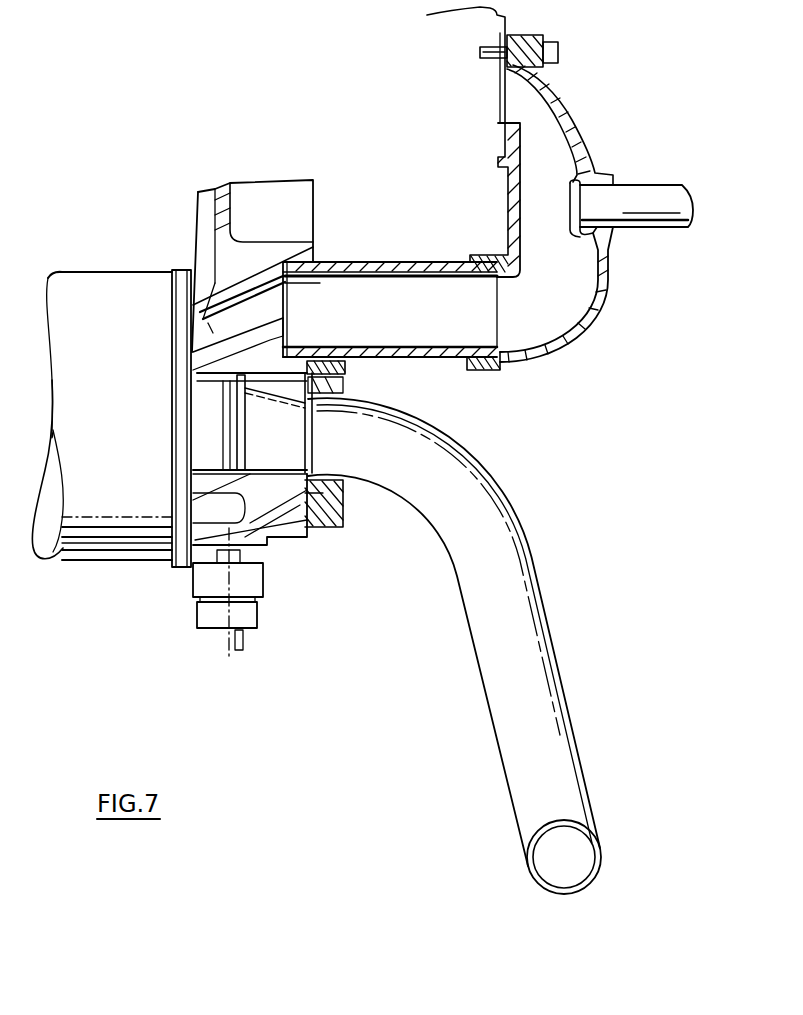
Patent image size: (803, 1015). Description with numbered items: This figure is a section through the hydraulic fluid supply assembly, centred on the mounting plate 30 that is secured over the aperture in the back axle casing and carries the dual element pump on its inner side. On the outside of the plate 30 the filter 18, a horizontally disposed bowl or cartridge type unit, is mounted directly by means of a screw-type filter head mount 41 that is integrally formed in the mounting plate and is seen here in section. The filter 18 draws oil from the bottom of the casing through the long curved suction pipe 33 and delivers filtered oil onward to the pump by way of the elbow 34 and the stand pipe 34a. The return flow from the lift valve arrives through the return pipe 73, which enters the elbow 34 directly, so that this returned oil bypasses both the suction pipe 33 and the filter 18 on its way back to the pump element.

The filter 18 is at (126, 398).
The mounting plate 30 is at (315, 178).
The suction pipe 33 is at (549, 705).
The elbow 34 is at (567, 293).
The stand pipe 34a is at (377, 292).
The screw-type filter head mount 41 is at (190, 560).
The return pipe 73 is at (647, 197).